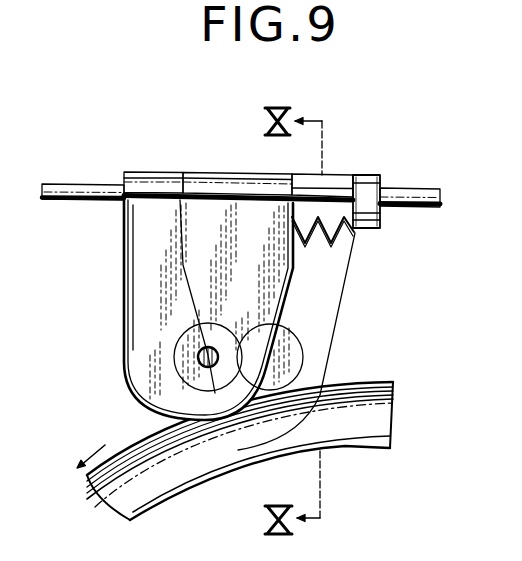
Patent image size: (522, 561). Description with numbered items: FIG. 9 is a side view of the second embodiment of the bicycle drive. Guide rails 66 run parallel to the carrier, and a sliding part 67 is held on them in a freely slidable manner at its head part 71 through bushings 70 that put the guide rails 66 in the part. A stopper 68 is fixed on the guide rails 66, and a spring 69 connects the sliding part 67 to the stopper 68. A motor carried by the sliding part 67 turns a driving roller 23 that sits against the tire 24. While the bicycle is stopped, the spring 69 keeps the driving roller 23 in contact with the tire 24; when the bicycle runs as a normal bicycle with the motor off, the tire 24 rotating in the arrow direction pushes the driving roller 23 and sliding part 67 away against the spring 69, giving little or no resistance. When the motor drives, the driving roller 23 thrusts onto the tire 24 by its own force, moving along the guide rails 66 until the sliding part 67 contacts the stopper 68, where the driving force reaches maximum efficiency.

The driving roller 23 is at (174, 357).
The tire 24 is at (141, 435).
The guide rails 66 is at (70, 191).
The sliding part 67 is at (132, 236).
The stopper 68 is at (366, 177).
The spring 69 is at (343, 242).
The bushings 70 is at (145, 185).
The head part 71 is at (208, 183).